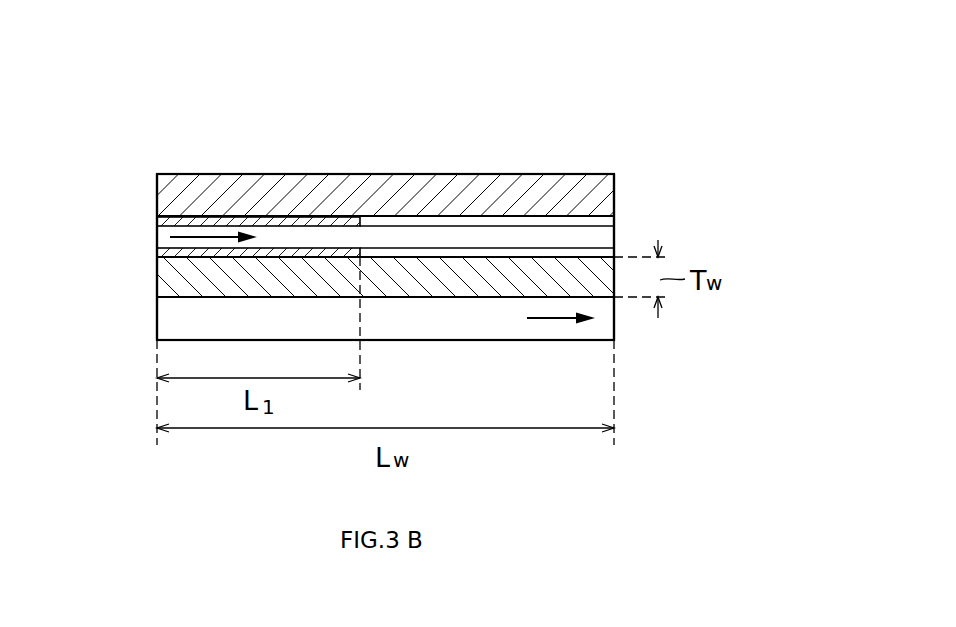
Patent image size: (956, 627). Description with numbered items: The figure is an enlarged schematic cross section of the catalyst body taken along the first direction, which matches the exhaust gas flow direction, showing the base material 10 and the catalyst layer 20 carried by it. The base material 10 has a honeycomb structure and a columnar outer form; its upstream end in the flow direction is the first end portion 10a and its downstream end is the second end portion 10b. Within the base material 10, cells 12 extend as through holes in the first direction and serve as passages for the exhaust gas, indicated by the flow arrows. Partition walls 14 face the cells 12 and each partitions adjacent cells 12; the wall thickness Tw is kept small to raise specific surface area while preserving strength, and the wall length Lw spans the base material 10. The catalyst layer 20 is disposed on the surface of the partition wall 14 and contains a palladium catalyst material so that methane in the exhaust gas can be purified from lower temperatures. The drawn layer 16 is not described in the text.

The base material 10 is at (618, 106).
The first end portion 10a is at (155, 190).
The second end portion 10b is at (615, 183).
The cells 12 is at (163, 317).
The partition walls 14 is at (162, 285).
The top layer 16 is at (213, 173).
The catalyst layer 20 is at (160, 252).